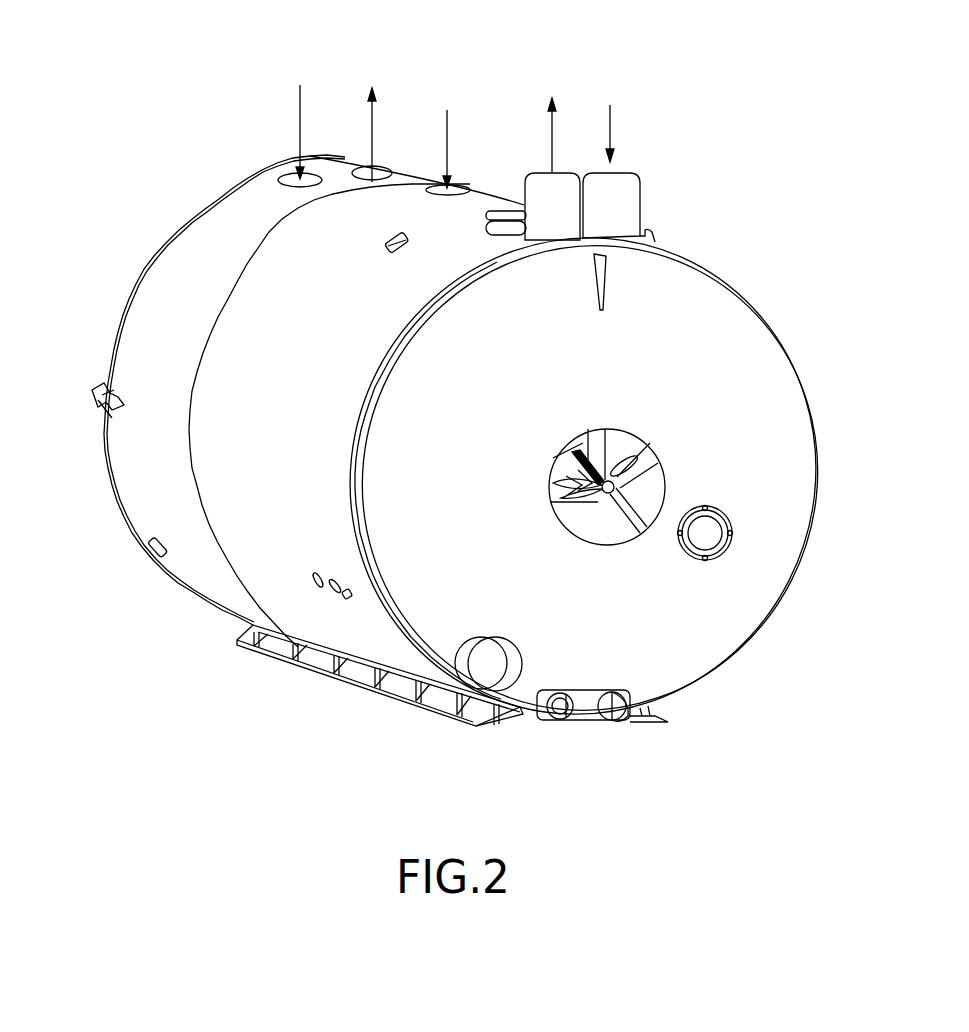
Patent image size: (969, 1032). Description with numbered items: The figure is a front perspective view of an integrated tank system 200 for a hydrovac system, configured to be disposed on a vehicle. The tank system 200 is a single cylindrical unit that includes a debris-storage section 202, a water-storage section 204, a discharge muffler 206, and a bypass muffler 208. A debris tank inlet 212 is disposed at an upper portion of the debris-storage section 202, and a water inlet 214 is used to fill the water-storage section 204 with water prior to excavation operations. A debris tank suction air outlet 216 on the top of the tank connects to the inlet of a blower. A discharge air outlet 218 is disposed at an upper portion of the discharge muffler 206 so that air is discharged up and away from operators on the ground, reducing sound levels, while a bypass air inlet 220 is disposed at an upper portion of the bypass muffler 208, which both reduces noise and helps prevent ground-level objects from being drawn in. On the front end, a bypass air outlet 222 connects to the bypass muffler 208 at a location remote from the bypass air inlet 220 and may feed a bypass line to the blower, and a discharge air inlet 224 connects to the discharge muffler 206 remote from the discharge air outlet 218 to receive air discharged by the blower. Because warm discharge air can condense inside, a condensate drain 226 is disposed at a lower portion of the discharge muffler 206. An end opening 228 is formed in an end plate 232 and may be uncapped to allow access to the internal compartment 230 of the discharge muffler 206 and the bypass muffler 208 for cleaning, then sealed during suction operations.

The integrated tank system 200 is at (158, 95).
The debris-storage section 202 is at (168, 277).
The water-storage section 204 is at (392, 210).
The discharge muffler 206 is at (395, 580).
The bypass muffler 208 is at (788, 353).
The debris tank inlet 212 is at (292, 178).
The water inlet 214 is at (468, 188).
The debris tank suction air outlet 216 is at (362, 170).
The discharge air outlet 218 is at (539, 172).
The bypass air inlet 220 is at (627, 170).
The bypass air outlet 222 is at (705, 533).
The discharge air inlet 224 is at (490, 670).
The condensate drain 226 is at (622, 720).
The end opening 228 is at (591, 524).
The internal compartment 230 is at (620, 443).
The end plate 232 is at (708, 648).